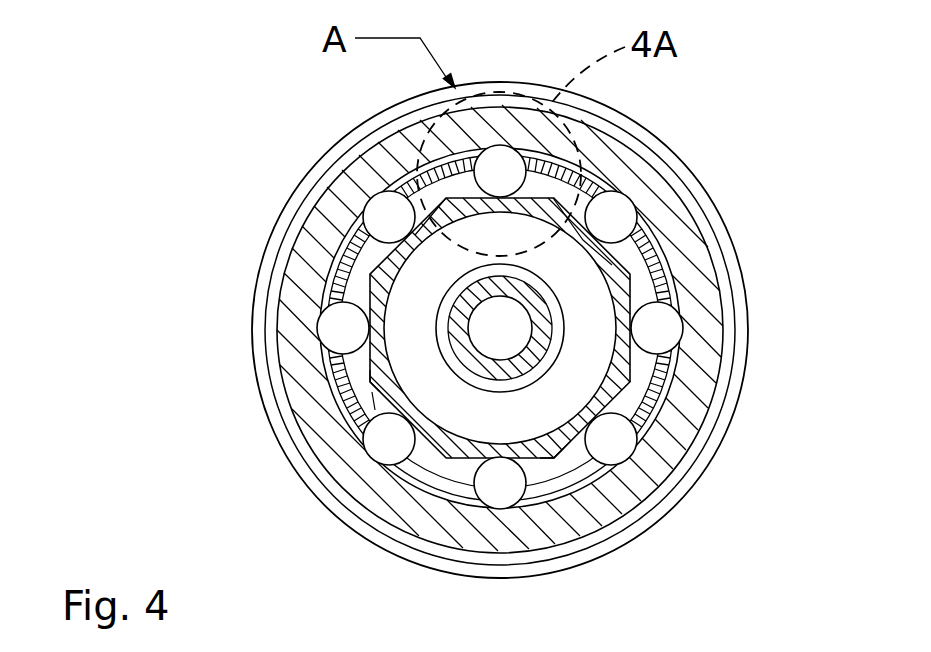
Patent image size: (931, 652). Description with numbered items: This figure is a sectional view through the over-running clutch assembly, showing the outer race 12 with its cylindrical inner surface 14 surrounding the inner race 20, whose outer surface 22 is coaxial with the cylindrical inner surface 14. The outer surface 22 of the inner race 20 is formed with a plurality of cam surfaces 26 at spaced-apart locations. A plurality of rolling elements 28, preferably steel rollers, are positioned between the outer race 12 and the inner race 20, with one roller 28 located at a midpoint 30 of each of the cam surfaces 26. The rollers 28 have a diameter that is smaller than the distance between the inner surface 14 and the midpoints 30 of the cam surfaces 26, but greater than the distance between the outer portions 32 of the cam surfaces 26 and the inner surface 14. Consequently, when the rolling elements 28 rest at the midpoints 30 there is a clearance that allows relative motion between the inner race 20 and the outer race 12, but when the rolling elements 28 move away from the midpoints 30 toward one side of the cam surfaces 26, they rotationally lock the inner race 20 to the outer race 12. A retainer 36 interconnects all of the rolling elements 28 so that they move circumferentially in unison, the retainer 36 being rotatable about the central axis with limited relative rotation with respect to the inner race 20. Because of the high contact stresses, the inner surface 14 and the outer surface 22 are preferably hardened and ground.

The outer race 12 is at (666, 202).
The cylindrical inner surface 14 is at (660, 243).
The inner race 20 is at (618, 378).
The outer surface 22 is at (577, 455).
The cam surfaces 26 is at (630, 291).
The rolling elements 28 is at (503, 165).
The midpoint 30 is at (412, 236).
The outer portions 32 is at (555, 460).
The retainer 36 is at (650, 265).